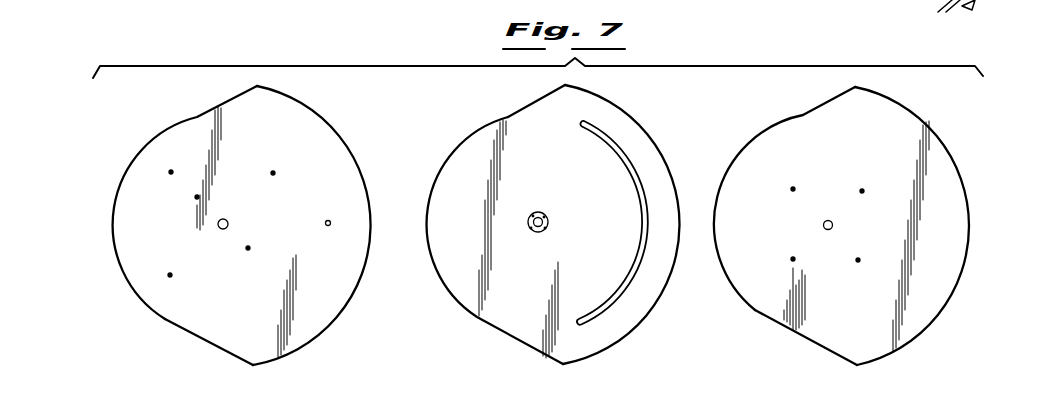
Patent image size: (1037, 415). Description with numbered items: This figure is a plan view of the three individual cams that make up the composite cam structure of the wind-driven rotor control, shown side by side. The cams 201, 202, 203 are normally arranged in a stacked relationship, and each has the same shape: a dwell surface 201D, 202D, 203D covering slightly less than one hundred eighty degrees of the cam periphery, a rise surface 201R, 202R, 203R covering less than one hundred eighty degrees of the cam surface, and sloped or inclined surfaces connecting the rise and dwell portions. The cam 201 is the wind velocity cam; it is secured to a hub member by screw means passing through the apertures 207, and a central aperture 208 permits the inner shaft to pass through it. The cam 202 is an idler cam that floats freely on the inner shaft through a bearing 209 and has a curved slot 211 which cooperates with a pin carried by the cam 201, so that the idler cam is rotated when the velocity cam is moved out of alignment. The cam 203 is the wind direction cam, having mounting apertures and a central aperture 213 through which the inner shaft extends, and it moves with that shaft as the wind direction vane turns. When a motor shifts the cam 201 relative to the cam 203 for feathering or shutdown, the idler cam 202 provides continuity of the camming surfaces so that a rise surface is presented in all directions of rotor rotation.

The cam 201 is at (305, 325).
The dwell surface 201D is at (163, 322).
The rise surface 201R is at (343, 311).
The cam 202 is at (630, 312).
The dwell surface 202D is at (443, 285).
The rise surface 202R is at (612, 348).
The cam 203 is at (948, 272).
The dwell surface 203D is at (757, 311).
The rise surface 203R is at (938, 318).
The apertures 207 is at (250, 197).
The central aperture 208 is at (229, 226).
The bearing 209 is at (547, 232).
The curved slot 211 is at (637, 275).
The central aperture 213 is at (823, 225).